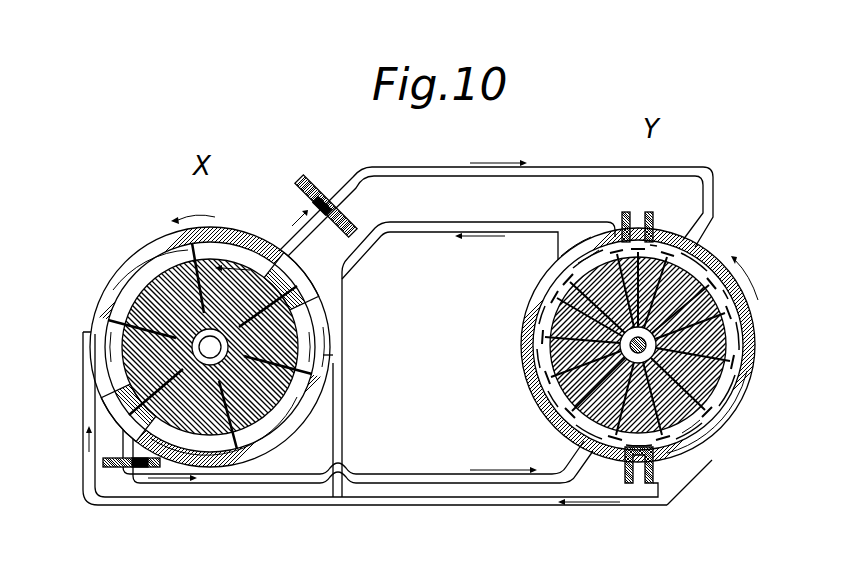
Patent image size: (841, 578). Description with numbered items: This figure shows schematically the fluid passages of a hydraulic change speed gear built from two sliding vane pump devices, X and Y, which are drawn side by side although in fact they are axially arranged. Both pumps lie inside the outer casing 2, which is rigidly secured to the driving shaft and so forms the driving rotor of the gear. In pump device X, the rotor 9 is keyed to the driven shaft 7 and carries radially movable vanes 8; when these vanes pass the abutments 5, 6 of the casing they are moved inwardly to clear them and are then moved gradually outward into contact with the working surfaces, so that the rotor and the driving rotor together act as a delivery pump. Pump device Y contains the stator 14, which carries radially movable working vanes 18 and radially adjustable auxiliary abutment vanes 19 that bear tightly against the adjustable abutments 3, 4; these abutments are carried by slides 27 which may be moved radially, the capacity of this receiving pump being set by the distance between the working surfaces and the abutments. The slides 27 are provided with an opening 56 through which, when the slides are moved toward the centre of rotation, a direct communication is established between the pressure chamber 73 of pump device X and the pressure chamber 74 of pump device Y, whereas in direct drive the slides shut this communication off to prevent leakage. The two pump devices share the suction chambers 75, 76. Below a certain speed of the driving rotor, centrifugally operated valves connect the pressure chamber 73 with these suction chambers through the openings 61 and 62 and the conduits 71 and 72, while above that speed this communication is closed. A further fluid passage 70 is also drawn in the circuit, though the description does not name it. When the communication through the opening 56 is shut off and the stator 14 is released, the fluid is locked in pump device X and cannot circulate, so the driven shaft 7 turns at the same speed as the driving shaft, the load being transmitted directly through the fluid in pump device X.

The outer casing 2 is at (147, 243).
The abutment 3 is at (652, 214).
The abutment 4 is at (626, 480).
The abutment 5 is at (320, 318).
The abutment 6 is at (122, 387).
The driven shaft 7 is at (117, 307).
The radially movable vanes 8 is at (197, 300).
The rotor 9 is at (148, 277).
The stator 14 is at (720, 343).
The working vanes 18 is at (735, 296).
The auxiliary abutment vanes 19 is at (745, 390).
The slides 27 is at (310, 180).
The opening 56 is at (322, 202).
The opening 61 is at (103, 392).
The opening 62 is at (323, 355).
The feed pipe 70 is at (580, 167).
The conduit 71 is at (490, 222).
The conduit 72 is at (345, 390).
The pressure chamber 73 is at (238, 240).
The pressure chamber 74 is at (688, 257).
The suction chamber 75 is at (110, 355).
The suction chamber 76 is at (588, 255).